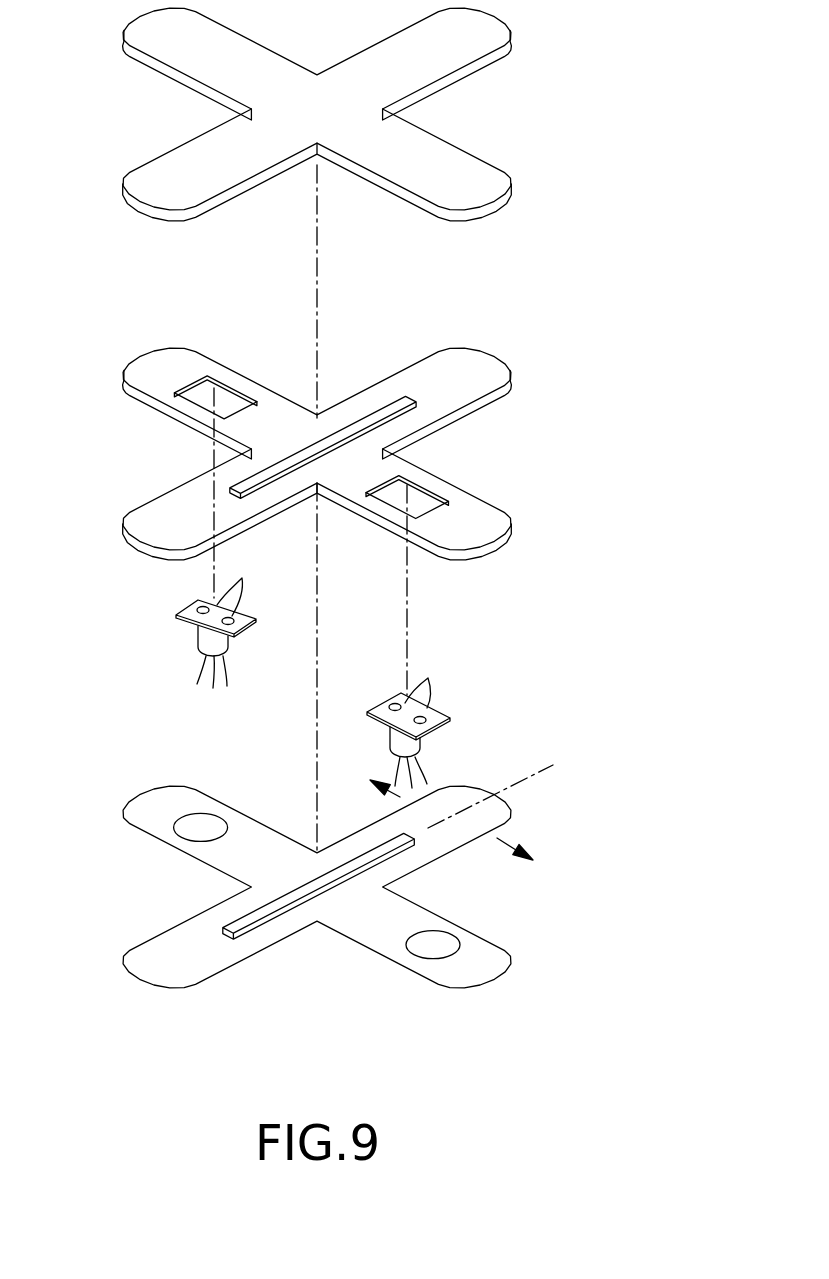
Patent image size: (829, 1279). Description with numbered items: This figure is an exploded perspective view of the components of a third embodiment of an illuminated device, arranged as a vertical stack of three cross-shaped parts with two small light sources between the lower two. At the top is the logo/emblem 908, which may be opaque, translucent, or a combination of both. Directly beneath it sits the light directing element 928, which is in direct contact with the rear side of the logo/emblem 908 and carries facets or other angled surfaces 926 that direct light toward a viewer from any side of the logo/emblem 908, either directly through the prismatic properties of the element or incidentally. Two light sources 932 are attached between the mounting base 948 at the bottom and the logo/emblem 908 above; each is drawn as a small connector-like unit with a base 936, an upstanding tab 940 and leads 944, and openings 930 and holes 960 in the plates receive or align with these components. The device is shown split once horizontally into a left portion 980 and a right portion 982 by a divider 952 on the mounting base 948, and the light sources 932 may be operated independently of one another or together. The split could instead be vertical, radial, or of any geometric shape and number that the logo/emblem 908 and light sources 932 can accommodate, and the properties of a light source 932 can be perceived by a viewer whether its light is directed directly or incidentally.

The logo/emblem 908 is at (474, 167).
The light directing element 928 is at (124, 366).
The facets or other angled surfaces 926 is at (381, 447).
The recesses 930 is at (238, 391).
The light sources 932 is at (295, 669).
The connector base 936 is at (184, 625).
The tab 940 is at (336, 629).
The leads 944 is at (209, 691).
The mounting base 948 is at (338, 922).
The divider 952 is at (263, 908).
The holes 960 is at (190, 839).
The left portion 980 is at (400, 797).
The right portion 982 is at (503, 838).